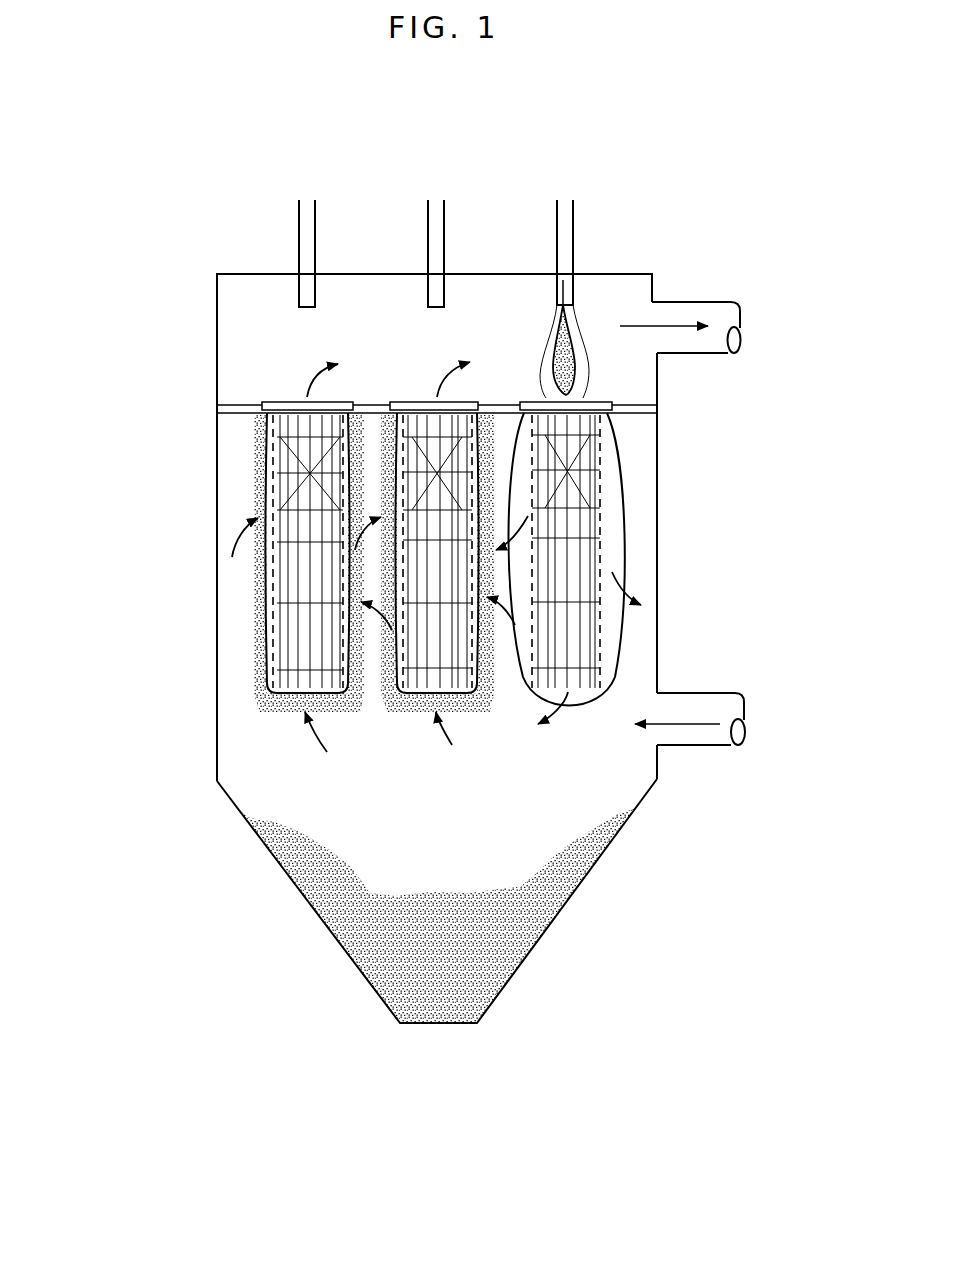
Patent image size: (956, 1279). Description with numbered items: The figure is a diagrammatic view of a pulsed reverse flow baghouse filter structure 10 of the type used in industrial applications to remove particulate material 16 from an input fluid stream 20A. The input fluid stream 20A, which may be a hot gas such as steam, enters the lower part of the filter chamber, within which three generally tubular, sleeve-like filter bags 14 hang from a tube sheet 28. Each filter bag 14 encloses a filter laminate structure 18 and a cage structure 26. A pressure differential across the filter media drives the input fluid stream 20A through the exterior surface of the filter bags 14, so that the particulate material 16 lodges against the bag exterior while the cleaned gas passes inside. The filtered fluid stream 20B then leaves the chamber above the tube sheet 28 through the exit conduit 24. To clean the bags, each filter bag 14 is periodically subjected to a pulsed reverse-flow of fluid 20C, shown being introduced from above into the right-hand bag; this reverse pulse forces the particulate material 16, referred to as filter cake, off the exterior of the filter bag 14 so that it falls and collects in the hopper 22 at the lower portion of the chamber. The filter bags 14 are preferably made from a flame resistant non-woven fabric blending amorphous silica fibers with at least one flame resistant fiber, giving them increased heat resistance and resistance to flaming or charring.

The baghouse filter structure 10 is at (258, 334).
The filter bags 14 is at (263, 573).
The particulate material 16 is at (260, 690).
The filter laminate structure 18 is at (258, 600).
The input fluid stream 20A is at (746, 732).
The filtered fluid stream 20B is at (660, 325).
The pulsed reverse-flow of fluid 20C is at (567, 340).
The hopper 22 is at (303, 803).
The exit conduit 24 is at (741, 336).
The cage structure 26 is at (297, 613).
The tube sheet 28 is at (233, 414).